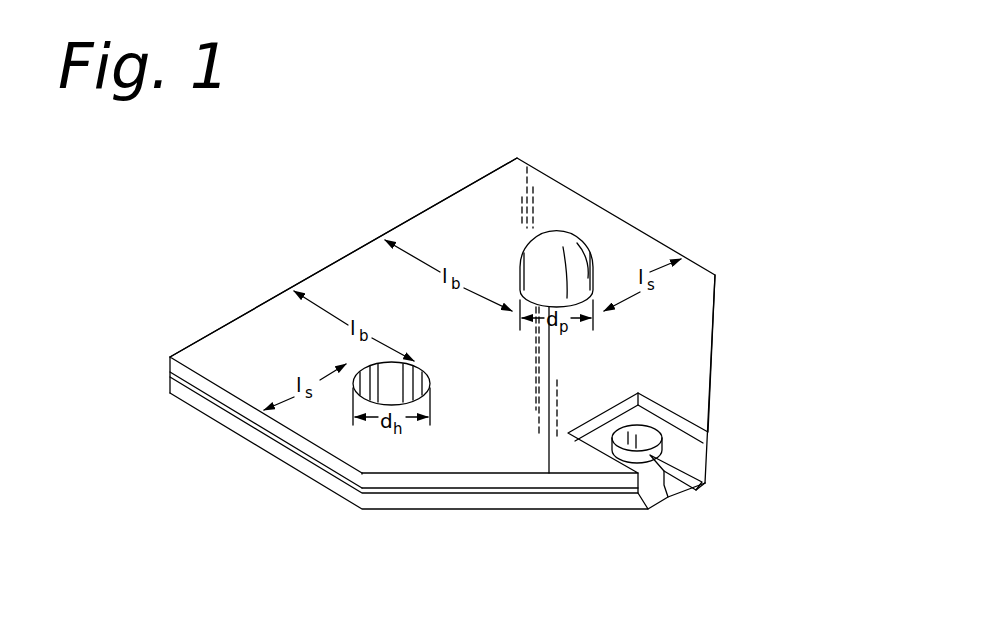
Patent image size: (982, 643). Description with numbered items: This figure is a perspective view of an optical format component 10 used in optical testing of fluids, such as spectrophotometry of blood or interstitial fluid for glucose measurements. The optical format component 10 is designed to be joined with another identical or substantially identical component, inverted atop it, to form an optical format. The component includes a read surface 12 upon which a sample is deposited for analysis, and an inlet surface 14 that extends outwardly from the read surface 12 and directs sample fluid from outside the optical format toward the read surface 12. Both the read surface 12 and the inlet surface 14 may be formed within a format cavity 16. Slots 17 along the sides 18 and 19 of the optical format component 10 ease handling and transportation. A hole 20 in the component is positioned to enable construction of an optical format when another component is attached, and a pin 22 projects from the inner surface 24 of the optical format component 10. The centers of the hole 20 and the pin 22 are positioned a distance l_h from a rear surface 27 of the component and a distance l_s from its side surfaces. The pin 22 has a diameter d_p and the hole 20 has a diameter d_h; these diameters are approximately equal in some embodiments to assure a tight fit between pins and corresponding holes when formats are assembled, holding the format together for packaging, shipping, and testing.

The optical format component 10 is at (290, 508).
The read surface 12 is at (645, 437).
The inlet surface 14 is at (677, 467).
The format cavity 16 is at (598, 438).
The slots 17 is at (265, 435).
The side 18 is at (188, 417).
The side 19 is at (700, 262).
The hole 20 is at (387, 377).
The pin 22 is at (555, 228).
The inner surface 24 is at (450, 228).
The rear surface 27 is at (218, 332).